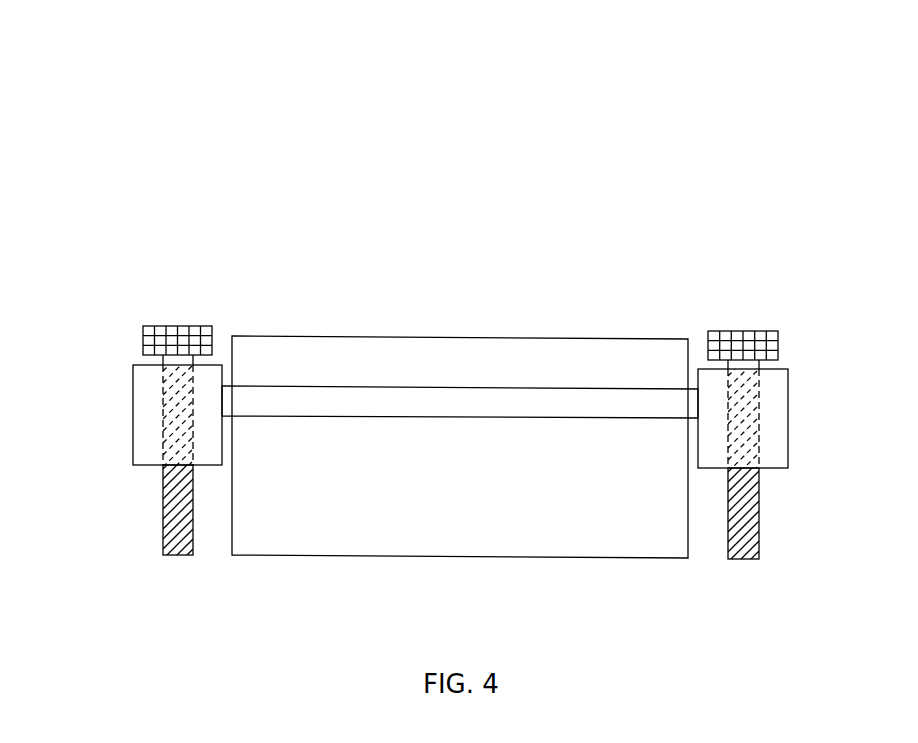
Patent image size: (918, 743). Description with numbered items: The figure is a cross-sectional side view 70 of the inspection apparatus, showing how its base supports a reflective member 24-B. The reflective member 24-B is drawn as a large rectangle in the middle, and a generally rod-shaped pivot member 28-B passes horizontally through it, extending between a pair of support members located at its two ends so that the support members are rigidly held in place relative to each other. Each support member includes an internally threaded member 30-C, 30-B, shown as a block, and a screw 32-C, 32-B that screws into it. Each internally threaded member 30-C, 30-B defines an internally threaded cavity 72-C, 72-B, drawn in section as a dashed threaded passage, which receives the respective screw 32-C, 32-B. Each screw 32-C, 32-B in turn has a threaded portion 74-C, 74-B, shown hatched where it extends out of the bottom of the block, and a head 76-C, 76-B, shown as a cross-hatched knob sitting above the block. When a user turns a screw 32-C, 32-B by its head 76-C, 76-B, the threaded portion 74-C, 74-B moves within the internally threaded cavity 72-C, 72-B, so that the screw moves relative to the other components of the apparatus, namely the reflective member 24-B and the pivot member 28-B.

The cross-sectional side view 70 is at (714, 91).
The reflective member 24-B is at (485, 348).
The pivot member 28-B is at (387, 405).
The screw 32-C is at (136, 404).
The screw 32-B is at (780, 411).
The head 76-C is at (183, 327).
The head 76-B is at (728, 330).
The internally threaded member 30-C is at (140, 405).
The internally threaded member 30-B is at (778, 430).
The internally threaded cavity 72-C is at (141, 485).
The internally threaded cavity 72-B is at (779, 490).
The threaded portion 74-C is at (162, 535).
The threaded portion 74-B is at (758, 538).